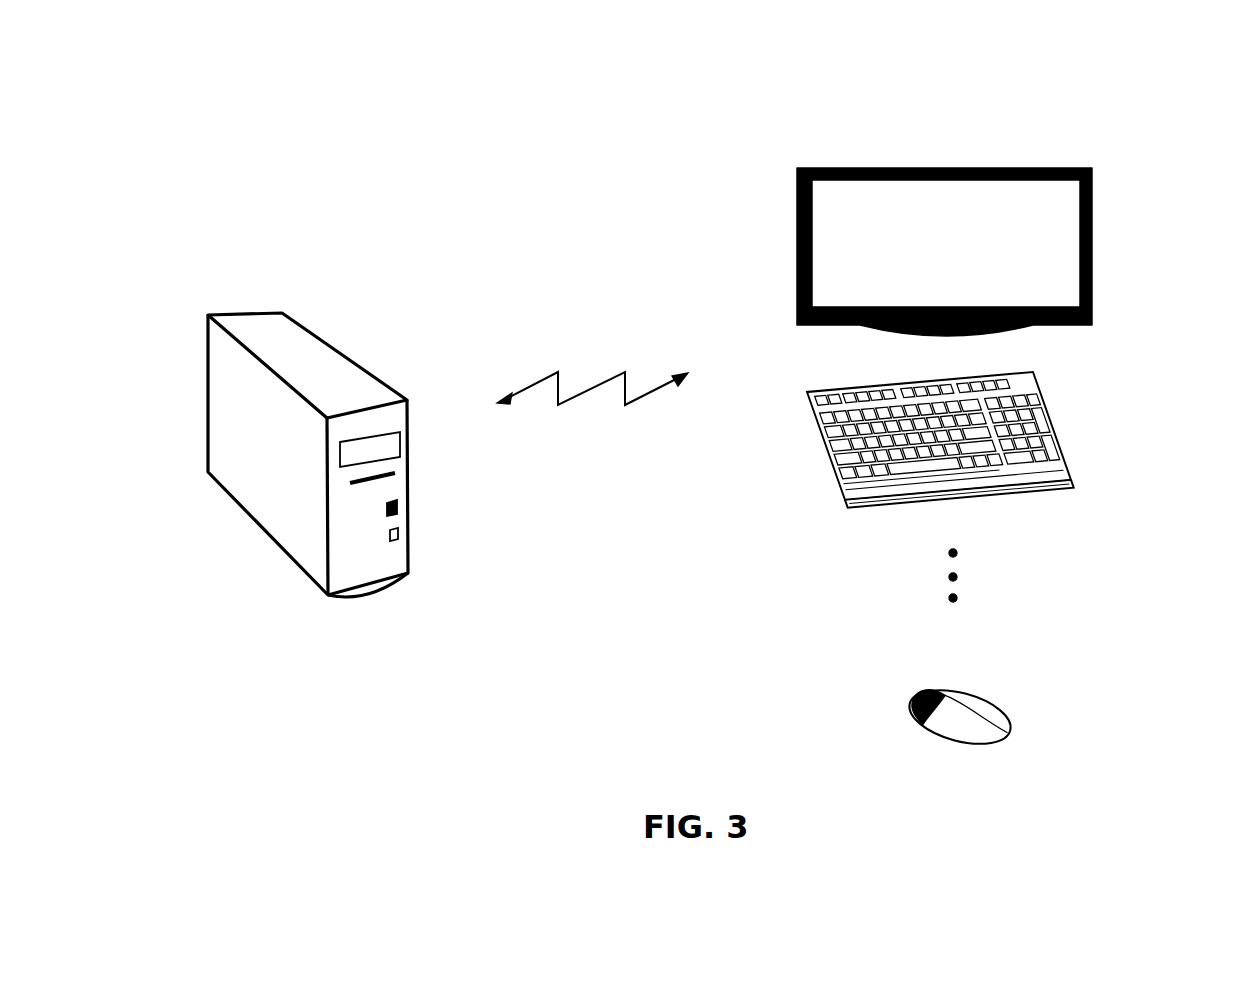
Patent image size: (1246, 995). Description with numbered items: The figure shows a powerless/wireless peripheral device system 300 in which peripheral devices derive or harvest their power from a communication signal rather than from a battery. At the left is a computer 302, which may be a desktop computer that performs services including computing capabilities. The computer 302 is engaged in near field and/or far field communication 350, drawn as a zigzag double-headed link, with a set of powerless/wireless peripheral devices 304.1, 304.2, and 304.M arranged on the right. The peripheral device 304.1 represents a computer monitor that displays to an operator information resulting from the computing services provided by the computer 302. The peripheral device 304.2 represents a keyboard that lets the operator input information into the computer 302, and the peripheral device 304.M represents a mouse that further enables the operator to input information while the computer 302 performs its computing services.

The powerless/wireless peripheral device system 300 is at (338, 158).
The computer 302 is at (337, 345).
The near field and/or far field communication 350 is at (595, 388).
The powerless/wireless peripheral device 304.1 is at (1092, 170).
The powerless/wireless peripheral device 304.2 is at (1060, 408).
The powerless/wireless peripheral device 304.M is at (1000, 707).